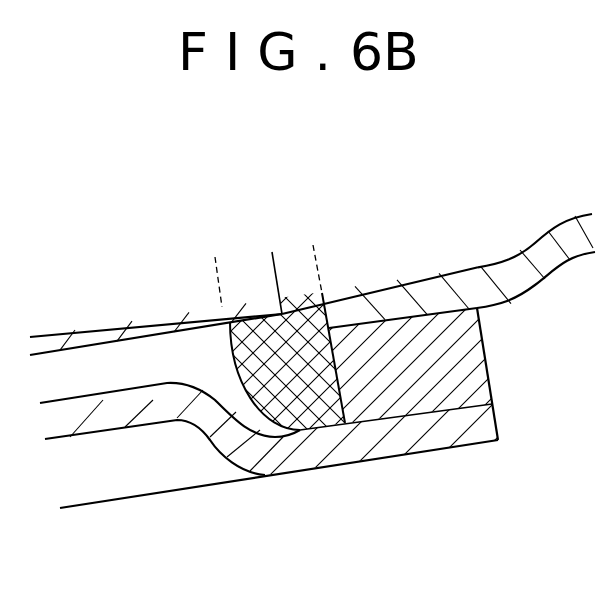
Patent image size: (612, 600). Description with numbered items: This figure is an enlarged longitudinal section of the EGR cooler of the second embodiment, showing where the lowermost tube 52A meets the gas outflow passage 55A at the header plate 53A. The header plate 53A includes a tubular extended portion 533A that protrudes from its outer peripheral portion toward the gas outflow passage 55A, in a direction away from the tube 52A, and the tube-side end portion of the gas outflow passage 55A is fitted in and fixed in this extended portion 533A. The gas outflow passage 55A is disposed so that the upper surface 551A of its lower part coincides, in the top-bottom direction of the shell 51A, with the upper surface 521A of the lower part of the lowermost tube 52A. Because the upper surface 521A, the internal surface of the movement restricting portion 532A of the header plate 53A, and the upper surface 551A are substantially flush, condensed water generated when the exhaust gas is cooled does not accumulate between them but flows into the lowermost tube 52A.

The shell 51A is at (252, 455).
The tube 52A is at (107, 334).
The upper surface of lower part of tube 521A is at (197, 308).
The header plate 53A is at (287, 367).
The movement restricting portion 532A is at (300, 323).
The extended portion 533A is at (393, 387).
The gas outflow passage 55A is at (462, 272).
The upper surface of lower part of gas outflow passage 551A is at (381, 281).